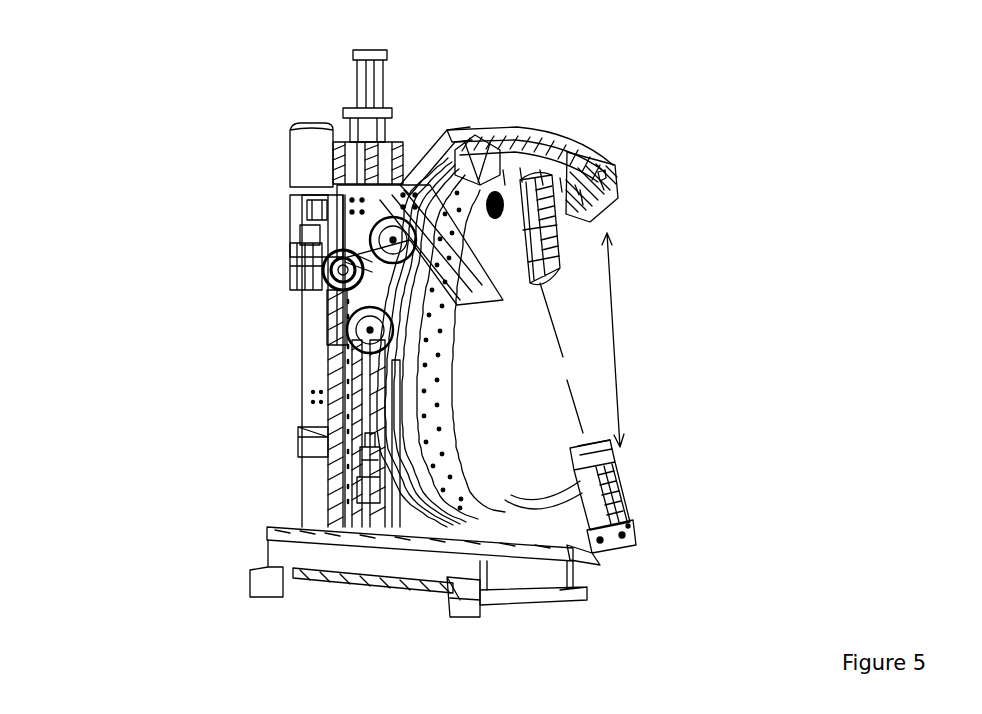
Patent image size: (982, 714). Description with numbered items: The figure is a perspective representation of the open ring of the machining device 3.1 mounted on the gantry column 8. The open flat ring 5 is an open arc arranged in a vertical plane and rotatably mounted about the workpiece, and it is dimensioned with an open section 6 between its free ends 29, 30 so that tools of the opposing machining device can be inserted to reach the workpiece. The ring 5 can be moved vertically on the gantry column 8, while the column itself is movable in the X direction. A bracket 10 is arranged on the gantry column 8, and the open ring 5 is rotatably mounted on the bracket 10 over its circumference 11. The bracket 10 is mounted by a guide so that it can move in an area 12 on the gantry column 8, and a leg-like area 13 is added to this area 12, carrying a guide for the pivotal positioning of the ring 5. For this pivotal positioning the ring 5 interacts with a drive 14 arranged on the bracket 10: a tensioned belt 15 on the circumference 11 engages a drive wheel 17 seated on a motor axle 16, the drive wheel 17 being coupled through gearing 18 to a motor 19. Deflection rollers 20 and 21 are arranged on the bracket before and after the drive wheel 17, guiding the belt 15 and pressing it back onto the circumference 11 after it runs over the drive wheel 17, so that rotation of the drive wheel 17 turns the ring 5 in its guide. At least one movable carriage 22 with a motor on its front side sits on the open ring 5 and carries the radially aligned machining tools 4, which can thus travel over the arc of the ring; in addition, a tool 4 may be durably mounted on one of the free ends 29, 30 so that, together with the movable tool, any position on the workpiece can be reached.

The machining device 3.1 is at (291, 96).
The tool 4 is at (561, 358).
The open flat ring 5 is at (467, 453).
The open section 6 is at (615, 340).
The gantry column 8 is at (313, 355).
The bracket 10 is at (420, 156).
The circumference 11 is at (543, 137).
The area 12 is at (337, 187).
The leg-like area 13 is at (480, 127).
The drive 14 is at (423, 303).
The tensioned belt 15 is at (327, 303).
The motor axle 16 is at (297, 230).
The drive wheel 17 is at (313, 267).
The gearing 18 is at (297, 253).
The motor 19 is at (297, 140).
The deflection roller 20 is at (327, 363).
The deflection roller 21 is at (370, 137).
The movable carriage 22 is at (518, 137).
The free end 29 is at (613, 170).
The free end 30 is at (635, 497).